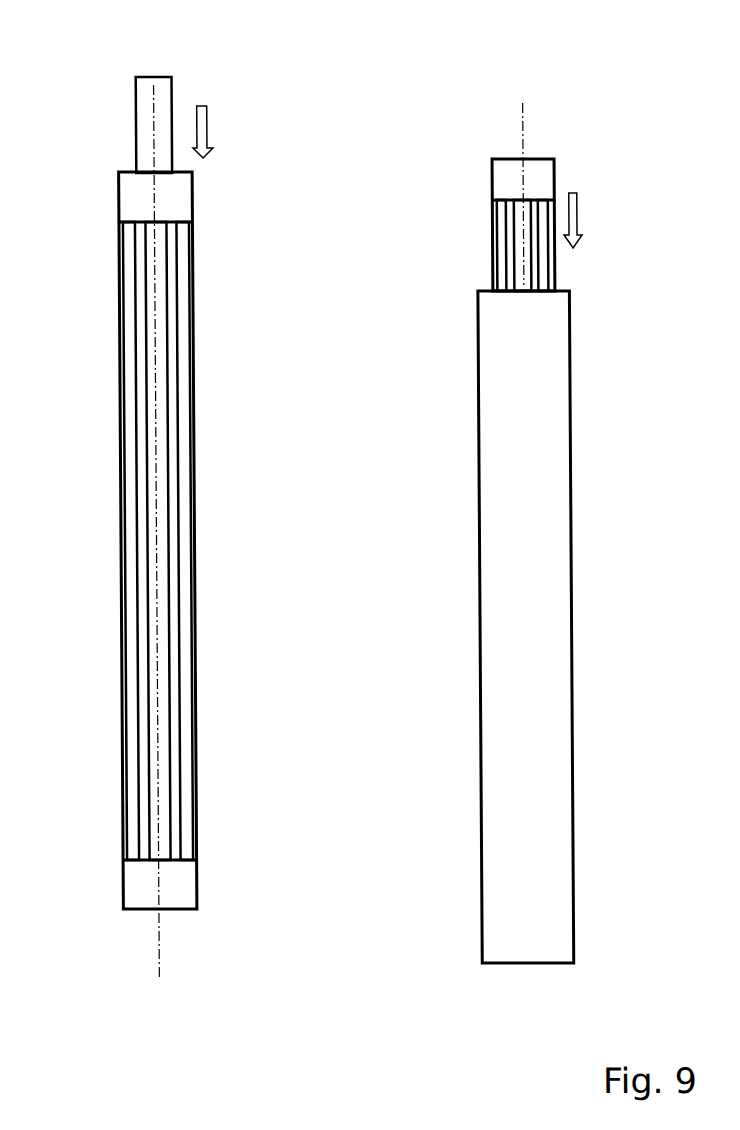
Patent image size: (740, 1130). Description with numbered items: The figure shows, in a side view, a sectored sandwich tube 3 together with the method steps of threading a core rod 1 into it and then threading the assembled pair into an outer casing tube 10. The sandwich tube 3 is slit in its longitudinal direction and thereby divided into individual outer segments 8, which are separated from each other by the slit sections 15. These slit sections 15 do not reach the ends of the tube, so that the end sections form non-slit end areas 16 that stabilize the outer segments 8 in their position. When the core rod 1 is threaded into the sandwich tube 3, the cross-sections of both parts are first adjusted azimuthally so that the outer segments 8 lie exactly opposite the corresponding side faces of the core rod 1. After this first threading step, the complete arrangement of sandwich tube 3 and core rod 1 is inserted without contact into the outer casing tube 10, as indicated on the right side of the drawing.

The core rod 1 is at (145, 100).
The sectored sandwich tube 3 is at (288, 488).
The outer segments 8 is at (137, 445).
The outer casing tube 10 is at (452, 513).
The slit sections 15 is at (156, 541).
The non-slit end areas 16 is at (129, 200).